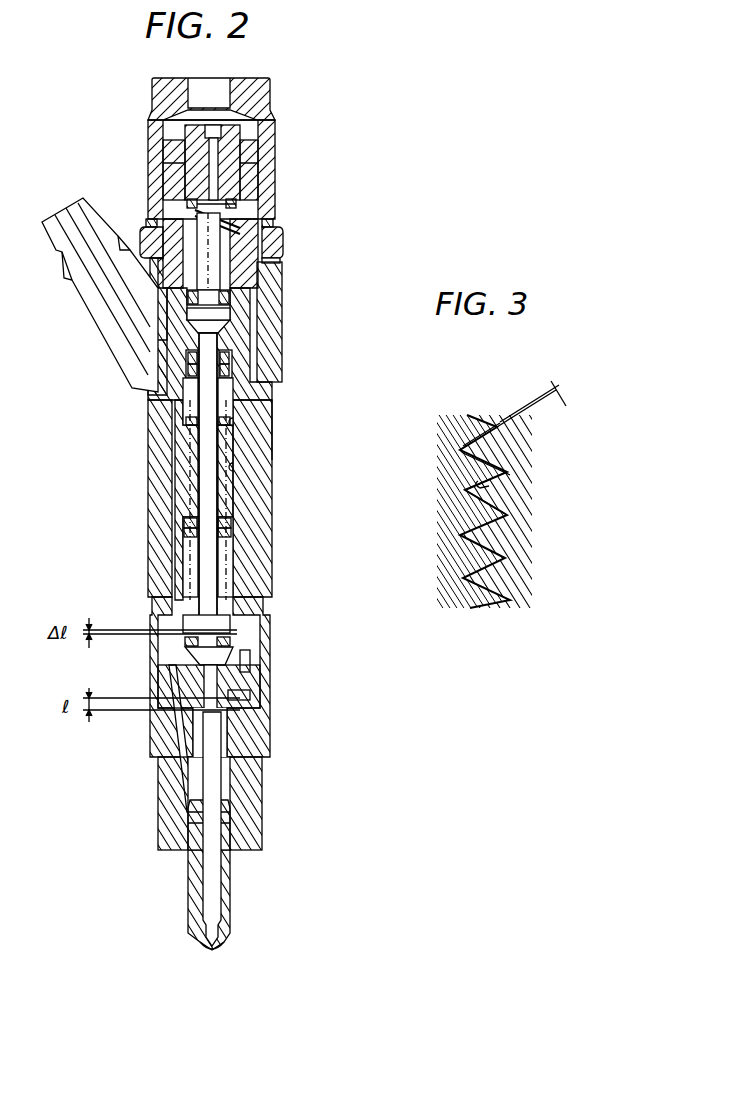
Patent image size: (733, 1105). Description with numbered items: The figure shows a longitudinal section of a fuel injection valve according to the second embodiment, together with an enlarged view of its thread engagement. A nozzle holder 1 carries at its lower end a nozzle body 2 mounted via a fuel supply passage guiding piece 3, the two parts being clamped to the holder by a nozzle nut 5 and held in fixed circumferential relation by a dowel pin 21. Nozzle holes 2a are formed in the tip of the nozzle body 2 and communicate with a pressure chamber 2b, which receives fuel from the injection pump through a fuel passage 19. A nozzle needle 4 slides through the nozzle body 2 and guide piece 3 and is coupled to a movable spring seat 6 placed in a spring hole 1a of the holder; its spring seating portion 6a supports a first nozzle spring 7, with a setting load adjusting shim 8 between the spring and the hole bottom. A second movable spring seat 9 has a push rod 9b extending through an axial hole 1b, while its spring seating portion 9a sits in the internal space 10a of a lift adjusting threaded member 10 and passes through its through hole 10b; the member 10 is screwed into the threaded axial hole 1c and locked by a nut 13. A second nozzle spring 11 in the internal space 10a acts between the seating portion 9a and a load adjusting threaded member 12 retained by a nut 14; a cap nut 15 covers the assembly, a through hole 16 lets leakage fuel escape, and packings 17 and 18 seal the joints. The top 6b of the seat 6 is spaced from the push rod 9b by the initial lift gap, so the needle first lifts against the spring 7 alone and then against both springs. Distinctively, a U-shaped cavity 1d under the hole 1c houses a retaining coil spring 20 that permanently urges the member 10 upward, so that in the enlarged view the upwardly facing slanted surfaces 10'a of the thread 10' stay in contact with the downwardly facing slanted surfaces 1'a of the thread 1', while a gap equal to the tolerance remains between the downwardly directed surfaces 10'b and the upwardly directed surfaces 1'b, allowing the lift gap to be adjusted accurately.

In FIG. 2, the nozzle holder 1 is at (237, 358).
In FIG. 3, the nozzle holder 1 is at (525, 511).
In FIG. 2, the spring hole 1a is at (270, 600).
In FIG. 2, the axial hole 1b is at (263, 495).
In FIG. 2, the axial hole 1c is at (276, 315).
In FIG. 2, the U-shaped cavity 1d is at (271, 440).
In FIG. 3, the thread of the nozzle holder 1' is at (530, 505).
In FIG. 3, the downwardly facing slanted surfaces 1'a is at (424, 467).
In FIG. 3, the upwardly directed slanted surfaces 1'b is at (536, 526).
In FIG. 2, the nozzle body 2 is at (270, 742).
In FIG. 2, the nozzle holes 2a is at (214, 950).
In FIG. 2, the pressure chamber 2b is at (222, 812).
In FIG. 2, the fuel supply passage guiding piece 3 is at (263, 683).
In FIG. 2, the nozzle needle 4 is at (212, 877).
In FIG. 2, the nozzle nut 5 is at (271, 762).
In FIG. 2, the movable spring seat 6 is at (258, 700).
In FIG. 2, the spring seating portion 6a is at (240, 648).
In FIG. 2, the top 6b is at (232, 630).
In FIG. 2, the first nozzle spring 7 is at (218, 548).
In FIG. 2, the setting load adjusting shim 8 is at (232, 532).
In FIG. 2, the movable spring seat 9 is at (170, 340).
In FIG. 2, the spring seating portion 9a is at (275, 345).
In FIG. 2, the push rod 9b is at (268, 468).
In FIG. 2, the lift adjusting threaded member 10 is at (297, 331).
In FIG. 3, the lift adjusting threaded member 10 is at (470, 483).
In FIG. 2, the internal space 10a is at (277, 292).
In FIG. 2, the through hole 10b is at (270, 402).
In FIG. 3, the thread of the member 10' is at (526, 402).
In FIG. 3, the upwardly facing slanted surfaces 10'a is at (541, 463).
In FIG. 3, the downwardly directed slanted surfaces 10'b is at (548, 493).
In FIG. 2, the second nozzle spring 11 is at (238, 204).
In FIG. 2, the load adjusting threaded member 12 is at (228, 182).
In FIG. 2, the nut 13 is at (283, 242).
In FIG. 2, the nut 14 is at (258, 150).
In FIG. 2, the cap nut 15 is at (258, 100).
In FIG. 2, the through hole 16 is at (145, 228).
In FIG. 2, the liquid-tight packing 17 is at (277, 262).
In FIG. 2, the liquid-tight packing 18 is at (272, 223).
In FIG. 2, the fuel passage 19 is at (103, 277).
In FIG. 2, the retaining coil spring 20 is at (270, 422).
In FIG. 2, the dowel pin 21 is at (255, 667).